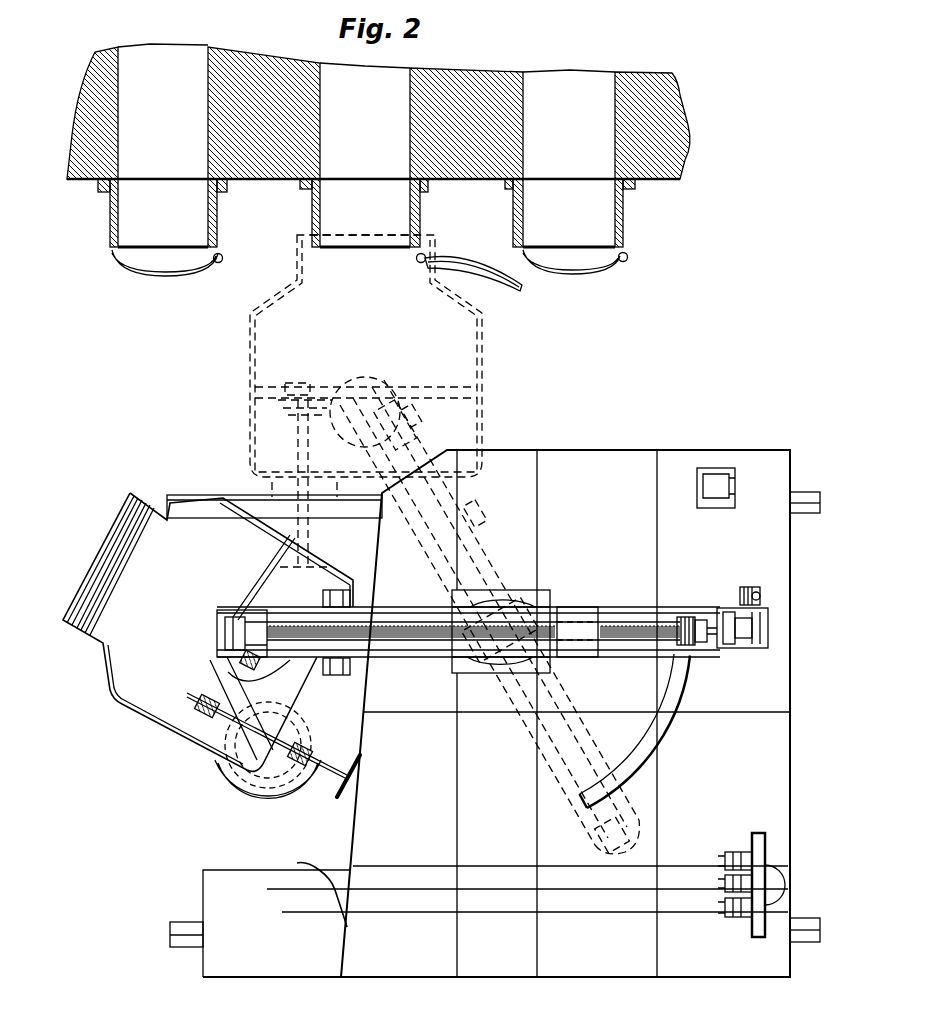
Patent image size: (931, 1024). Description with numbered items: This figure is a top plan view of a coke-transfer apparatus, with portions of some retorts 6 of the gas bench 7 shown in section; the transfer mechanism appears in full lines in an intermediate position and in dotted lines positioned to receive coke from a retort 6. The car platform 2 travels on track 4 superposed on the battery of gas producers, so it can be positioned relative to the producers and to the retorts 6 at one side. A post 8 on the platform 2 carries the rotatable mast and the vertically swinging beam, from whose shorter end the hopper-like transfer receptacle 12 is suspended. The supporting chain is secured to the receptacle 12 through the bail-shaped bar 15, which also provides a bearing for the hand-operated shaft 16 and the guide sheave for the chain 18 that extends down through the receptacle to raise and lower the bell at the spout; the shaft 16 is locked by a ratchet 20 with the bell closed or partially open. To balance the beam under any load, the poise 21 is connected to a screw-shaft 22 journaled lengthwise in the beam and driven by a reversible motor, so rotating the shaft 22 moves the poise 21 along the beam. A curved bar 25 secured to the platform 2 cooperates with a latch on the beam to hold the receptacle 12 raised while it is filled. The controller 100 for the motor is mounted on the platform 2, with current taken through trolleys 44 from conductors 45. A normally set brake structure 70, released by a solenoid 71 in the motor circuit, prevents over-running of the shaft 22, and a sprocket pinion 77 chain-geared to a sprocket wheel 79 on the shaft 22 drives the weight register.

The car platform 2 is at (519, 978).
The track 4 is at (200, 496).
The retorts 6 is at (312, 209).
The gas bench 7 is at (490, 186).
The post 8 is at (522, 600).
The transfer receptacle 12 is at (207, 632).
The bail-shaped bar 15 is at (262, 577).
The hand-operated shaft 16 is at (333, 772).
The chain 18 is at (251, 708).
The ratchet 20 is at (317, 735).
The poise 21 is at (585, 607).
The screw-shaft 22 is at (642, 620).
The curved bar 25 is at (656, 750).
The trolleys 44 is at (735, 855).
The conductors 45 is at (603, 866).
The brake structure 70 is at (735, 648).
The solenoid 71 is at (752, 590).
The sprocket pinion 77 is at (700, 617).
The sprocket wheel 79 is at (676, 642).
The controller 100 is at (712, 506).